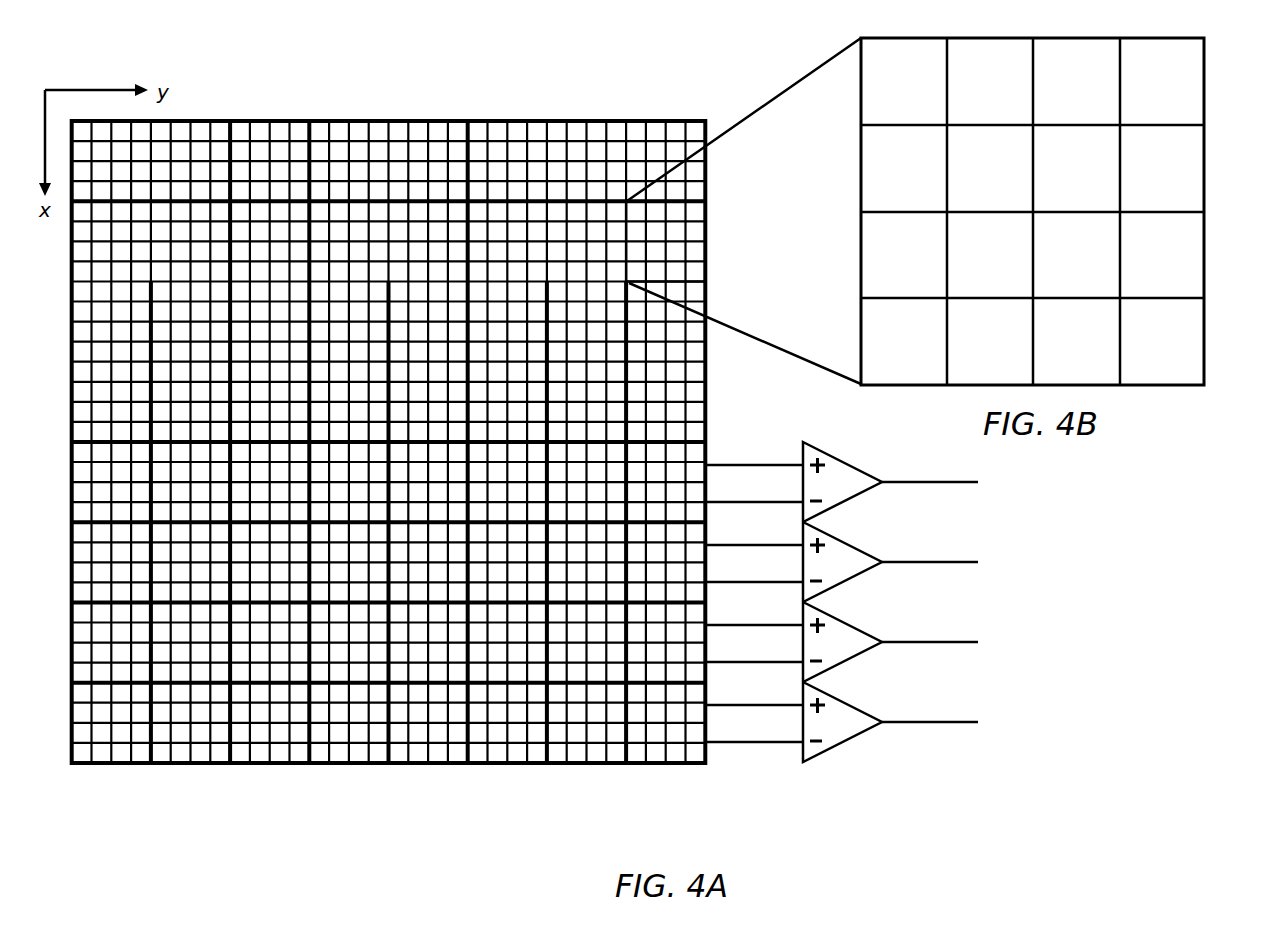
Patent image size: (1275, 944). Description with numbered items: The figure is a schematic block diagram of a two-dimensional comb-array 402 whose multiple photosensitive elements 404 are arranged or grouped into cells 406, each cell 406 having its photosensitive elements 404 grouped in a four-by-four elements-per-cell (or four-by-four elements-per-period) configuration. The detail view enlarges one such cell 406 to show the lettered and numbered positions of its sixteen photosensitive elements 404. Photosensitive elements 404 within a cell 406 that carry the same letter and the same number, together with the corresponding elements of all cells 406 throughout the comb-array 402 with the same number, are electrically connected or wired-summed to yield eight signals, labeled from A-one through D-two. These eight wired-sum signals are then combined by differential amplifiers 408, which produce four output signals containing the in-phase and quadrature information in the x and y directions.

In FIG. 4A, the 2D comb-array 402 is at (170, 203).
In FIG. 4A, the photosensitive elements 404 is at (706, 207).
In FIG. 4B, the photosensitive elements 404 is at (1205, 77).
In FIG. 4A, the cells 406 is at (627, 120).
In FIG. 4A, the differential amplifiers 408 is at (838, 775).